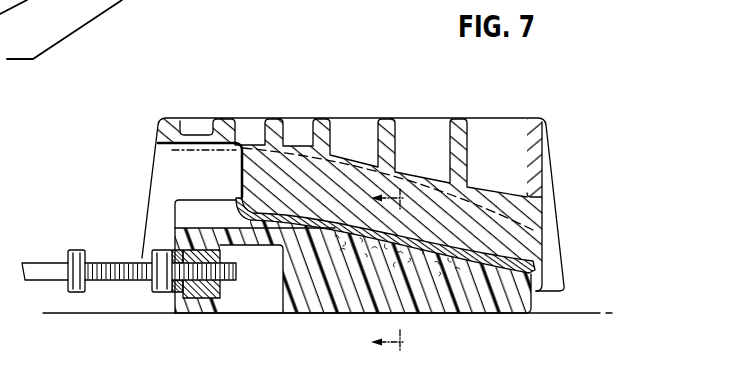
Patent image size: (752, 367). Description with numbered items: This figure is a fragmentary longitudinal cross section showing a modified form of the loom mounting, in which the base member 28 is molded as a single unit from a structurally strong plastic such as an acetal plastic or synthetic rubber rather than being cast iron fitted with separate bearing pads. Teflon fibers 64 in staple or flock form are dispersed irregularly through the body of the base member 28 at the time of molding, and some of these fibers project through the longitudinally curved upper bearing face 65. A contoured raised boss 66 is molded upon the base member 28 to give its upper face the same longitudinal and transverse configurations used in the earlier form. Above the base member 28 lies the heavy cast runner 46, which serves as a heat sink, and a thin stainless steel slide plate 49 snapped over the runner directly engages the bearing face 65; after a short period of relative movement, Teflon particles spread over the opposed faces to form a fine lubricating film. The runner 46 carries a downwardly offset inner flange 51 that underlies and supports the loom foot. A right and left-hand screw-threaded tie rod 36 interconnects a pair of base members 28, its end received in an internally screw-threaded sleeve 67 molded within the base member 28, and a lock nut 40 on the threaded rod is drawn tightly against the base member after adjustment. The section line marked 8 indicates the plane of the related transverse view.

The runner 46 is at (418, 163).
The slide plate 49 is at (288, 196).
The upper bearing face 65 is at (359, 226).
The contoured raised boss 66 is at (488, 236).
The Teflon fibers 64 is at (426, 272).
The base member 28 is at (352, 298).
The internally screw-threaded sleeve 67 is at (190, 305).
The tie rod 36 is at (58, 270).
The lock nut 40 is at (163, 275).
The extension or flange 51 is at (547, 296).
The section line 8- 8 is at (396, 270).